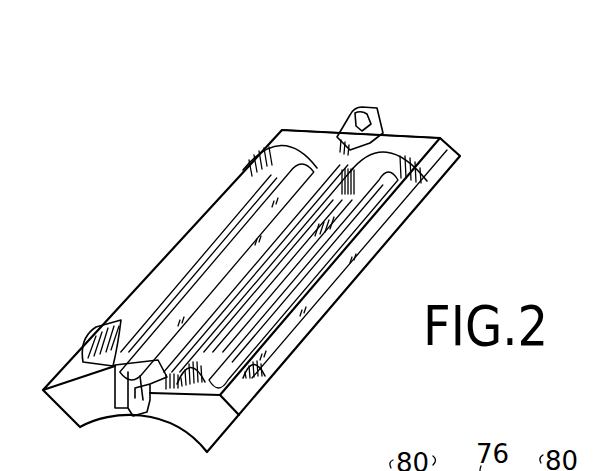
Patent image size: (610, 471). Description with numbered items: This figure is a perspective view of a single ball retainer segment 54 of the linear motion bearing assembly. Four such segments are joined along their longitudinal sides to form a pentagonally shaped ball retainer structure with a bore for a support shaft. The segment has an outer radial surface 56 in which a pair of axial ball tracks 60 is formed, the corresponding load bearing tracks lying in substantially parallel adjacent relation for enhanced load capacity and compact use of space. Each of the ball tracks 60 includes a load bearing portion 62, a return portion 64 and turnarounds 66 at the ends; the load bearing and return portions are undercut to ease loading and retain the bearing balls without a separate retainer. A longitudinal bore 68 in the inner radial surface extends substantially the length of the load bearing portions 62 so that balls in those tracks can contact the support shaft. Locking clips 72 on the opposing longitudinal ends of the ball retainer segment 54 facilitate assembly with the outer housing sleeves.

The ball retainer segment 54 is at (218, 418).
The outer radial surface 56 is at (285, 131).
The axial ball tracks 60 is at (418, 192).
The load bearing portions 62 is at (240, 273).
The return portions 64 is at (233, 190).
The turnarounds 66 is at (268, 155).
The longitudinal bore 68 is at (320, 165).
The locking clips 72 is at (383, 117).